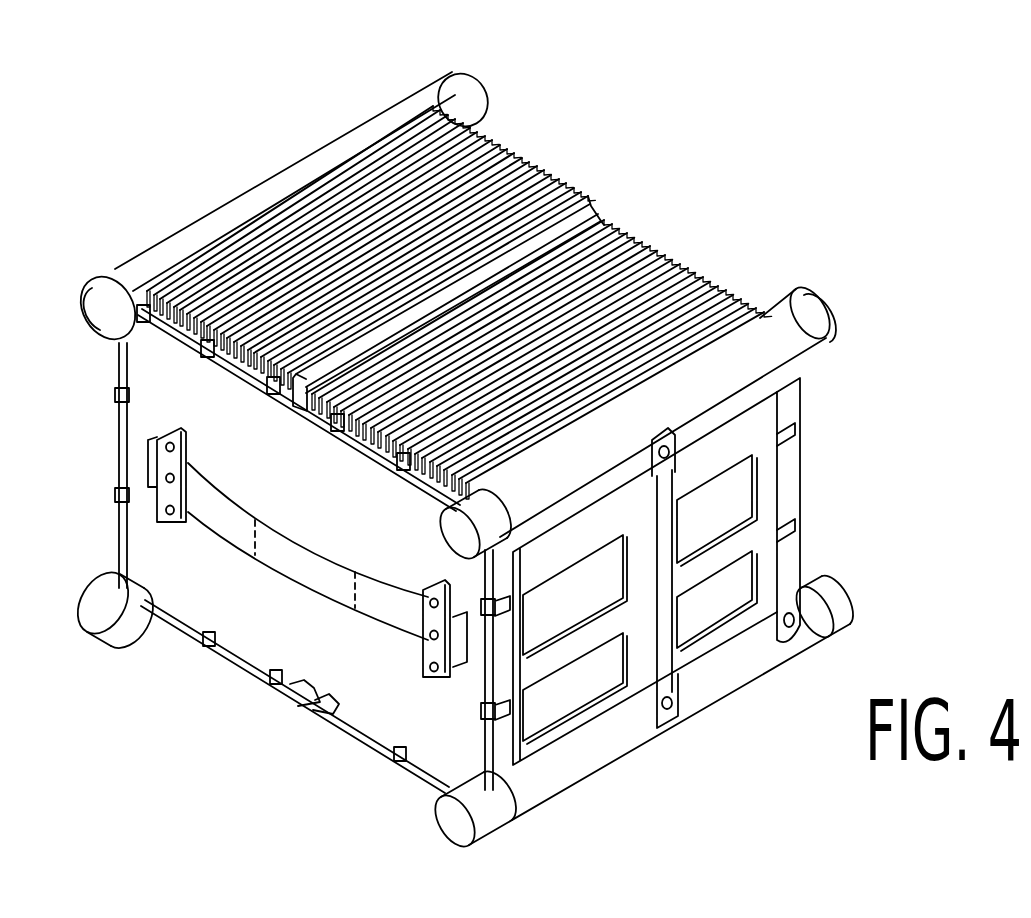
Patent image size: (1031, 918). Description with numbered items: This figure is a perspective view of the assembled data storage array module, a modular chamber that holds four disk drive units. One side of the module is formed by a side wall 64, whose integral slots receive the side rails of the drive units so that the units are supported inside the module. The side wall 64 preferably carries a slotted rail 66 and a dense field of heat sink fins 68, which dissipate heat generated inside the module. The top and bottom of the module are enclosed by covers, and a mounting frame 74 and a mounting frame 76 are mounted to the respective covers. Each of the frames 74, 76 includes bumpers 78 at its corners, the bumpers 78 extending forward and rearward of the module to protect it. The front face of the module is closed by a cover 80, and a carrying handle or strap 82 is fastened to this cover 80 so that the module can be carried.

The side wall 64 is at (658, 251).
The slotted rail 66 is at (601, 216).
The heat sink fins 68 is at (703, 288).
The mounting frame 74 is at (723, 663).
The mounting frame 76 is at (253, 191).
The bumpers 78 is at (450, 78).
The cover 80 is at (263, 638).
The carrying handle or strap 82 is at (288, 557).